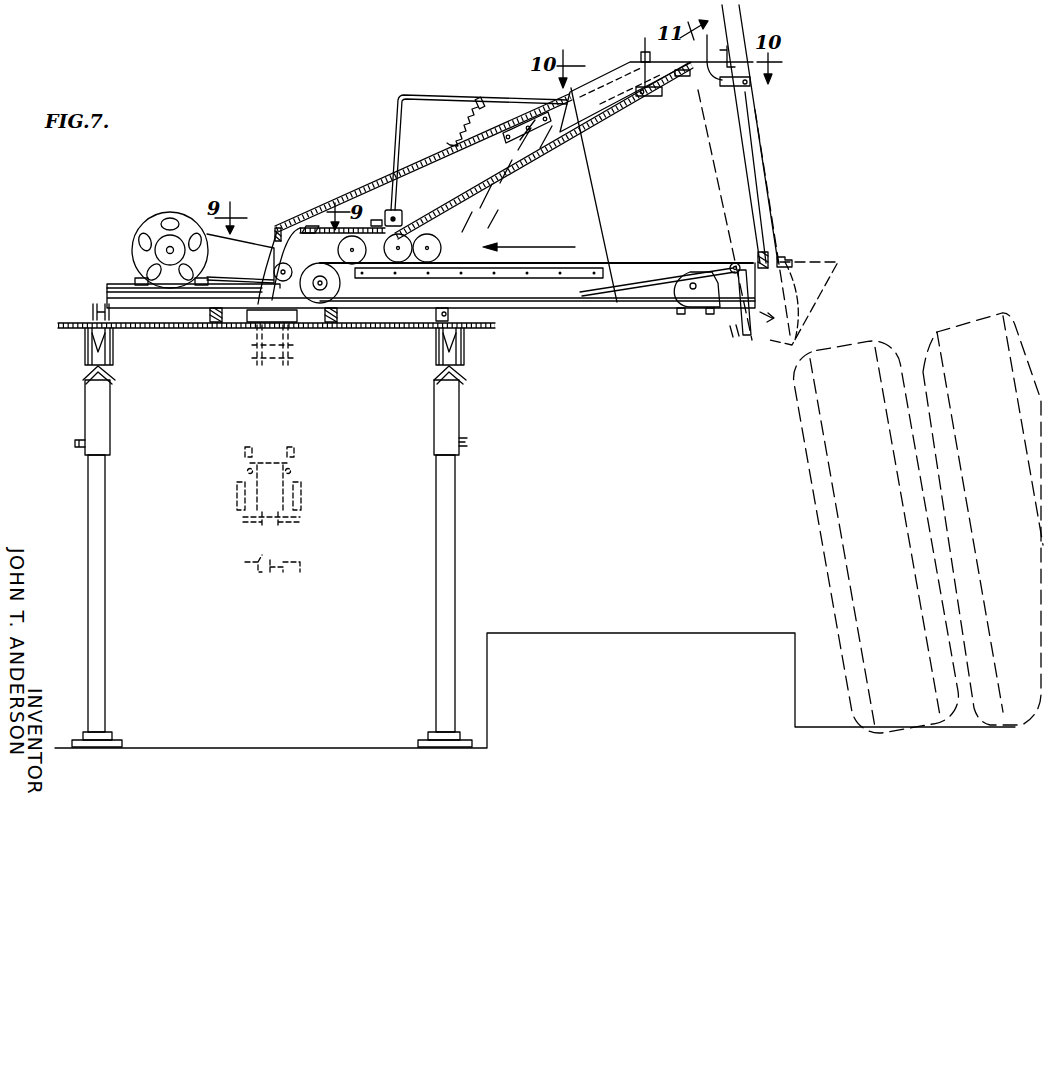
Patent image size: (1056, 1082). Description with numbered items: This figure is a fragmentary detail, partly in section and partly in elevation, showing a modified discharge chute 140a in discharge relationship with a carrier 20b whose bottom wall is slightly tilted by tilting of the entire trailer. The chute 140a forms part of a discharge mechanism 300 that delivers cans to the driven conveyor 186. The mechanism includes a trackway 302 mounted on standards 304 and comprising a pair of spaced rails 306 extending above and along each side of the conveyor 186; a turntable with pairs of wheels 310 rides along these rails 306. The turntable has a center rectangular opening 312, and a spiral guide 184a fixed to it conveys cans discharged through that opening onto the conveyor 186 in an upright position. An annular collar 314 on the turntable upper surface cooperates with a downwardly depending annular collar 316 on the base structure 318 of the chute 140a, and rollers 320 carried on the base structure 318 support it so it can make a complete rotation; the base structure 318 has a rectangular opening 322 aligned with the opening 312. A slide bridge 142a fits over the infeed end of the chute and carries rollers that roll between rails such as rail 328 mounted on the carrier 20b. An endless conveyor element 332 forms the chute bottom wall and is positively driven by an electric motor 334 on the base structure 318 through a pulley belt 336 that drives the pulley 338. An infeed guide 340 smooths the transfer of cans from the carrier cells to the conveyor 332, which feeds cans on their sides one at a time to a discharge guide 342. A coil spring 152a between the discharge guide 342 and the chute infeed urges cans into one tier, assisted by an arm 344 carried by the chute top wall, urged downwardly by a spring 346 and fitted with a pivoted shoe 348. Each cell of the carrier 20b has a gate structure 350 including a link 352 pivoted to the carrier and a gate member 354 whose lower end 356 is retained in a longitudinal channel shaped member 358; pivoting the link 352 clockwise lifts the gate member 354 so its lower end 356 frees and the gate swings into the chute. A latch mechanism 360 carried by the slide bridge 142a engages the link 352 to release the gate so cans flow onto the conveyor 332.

The discharge mechanism 300 is at (180, 230).
The electric motor 334 is at (135, 230).
The pulley belt 336 is at (240, 237).
The discharge guide 342 is at (279, 232).
The opening 322 is at (250, 299).
The base structure 318 is at (163, 310).
The rollers 320 is at (95, 304).
The annular collar 316 is at (313, 315).
The annular collar 314 is at (213, 323).
The opening 312 is at (273, 337).
The spiral guide 184a is at (253, 360).
The driven conveyor 186 is at (293, 518).
The trackway 302 is at (62, 373).
The rails 306 is at (83, 372).
The wheels 310 is at (112, 372).
The standards 304 is at (83, 467).
The endless conveyor element 332 is at (623, 263).
The pulley 338 is at (343, 287).
The discharge chute 140a is at (348, 183).
The coil spring 152a is at (517, 170).
The shoe 348 is at (406, 215).
The arm 344 is at (460, 96).
The spring 346 is at (453, 122).
The slide bridge 142a is at (600, 86).
The latch mechanism 360 is at (701, 74).
The link 352 is at (751, 86).
The gate member 354 is at (757, 138).
The gate structure 350 is at (766, 173).
The lower end 356 is at (770, 256).
The channel shaped member 358 is at (795, 257).
The infeed guide 340 is at (718, 271).
The carrier 20b is at (768, 338).
The rail 328 is at (800, 285).